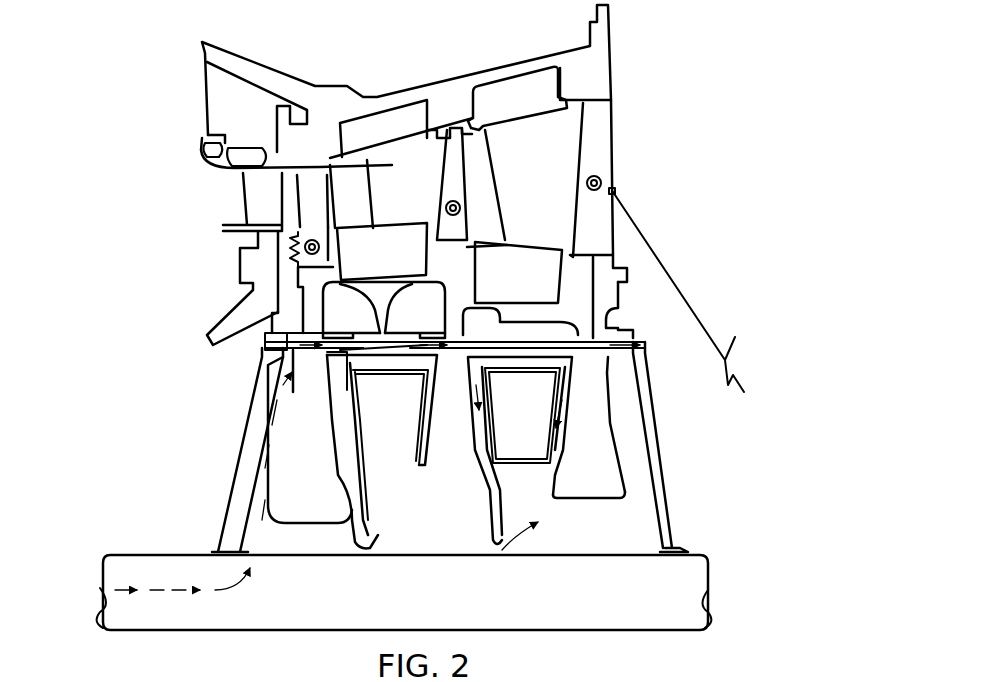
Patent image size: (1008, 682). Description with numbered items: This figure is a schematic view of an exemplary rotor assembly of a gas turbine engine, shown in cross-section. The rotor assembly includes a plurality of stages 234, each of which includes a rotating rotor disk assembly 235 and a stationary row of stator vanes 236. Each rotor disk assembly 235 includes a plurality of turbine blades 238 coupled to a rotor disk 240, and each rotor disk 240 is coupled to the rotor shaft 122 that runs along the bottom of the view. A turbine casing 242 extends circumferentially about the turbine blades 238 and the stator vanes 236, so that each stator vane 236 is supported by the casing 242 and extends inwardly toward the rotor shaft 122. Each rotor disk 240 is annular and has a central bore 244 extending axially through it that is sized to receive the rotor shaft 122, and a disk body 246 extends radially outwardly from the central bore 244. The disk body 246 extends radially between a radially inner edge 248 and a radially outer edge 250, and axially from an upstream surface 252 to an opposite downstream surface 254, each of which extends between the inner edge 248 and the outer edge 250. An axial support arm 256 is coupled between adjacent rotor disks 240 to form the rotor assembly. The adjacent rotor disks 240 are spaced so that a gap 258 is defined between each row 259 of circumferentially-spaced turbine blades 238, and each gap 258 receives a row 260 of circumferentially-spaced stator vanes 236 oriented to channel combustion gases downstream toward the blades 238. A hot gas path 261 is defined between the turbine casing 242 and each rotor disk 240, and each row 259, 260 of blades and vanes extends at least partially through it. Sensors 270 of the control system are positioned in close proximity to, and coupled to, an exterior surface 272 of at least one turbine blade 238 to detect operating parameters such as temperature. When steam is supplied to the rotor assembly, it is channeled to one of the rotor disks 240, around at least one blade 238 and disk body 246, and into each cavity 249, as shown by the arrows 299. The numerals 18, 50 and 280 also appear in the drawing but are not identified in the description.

The rotor disk arm 18 is at (654, 417).
The turbine blade root 50 is at (614, 433).
The rotor shaft 122 is at (633, 603).
The stages 234 is at (403, 125).
The rotor disk assembly 235 is at (635, 313).
The stator vanes 236 is at (407, 184).
The turbine blades 238 is at (337, 211).
The rotor disk 240 is at (483, 455).
The turbine casing 242 is at (483, 68).
The central bore 244 is at (648, 505).
The disk body 246 is at (606, 490).
The radially inner edge 248 is at (573, 505).
The cavity 249 is at (640, 347).
The radially outer edge 250 is at (263, 402).
The upstream surface 252 is at (283, 495).
The downstream surface 254 is at (333, 417).
The axial support arm 256 is at (596, 337).
The gap 258 is at (575, 150).
The row of turbine blades 259 is at (303, 155).
The row of stator vanes 260 is at (387, 137).
The hot gas path 261 is at (480, 158).
The sensors 270 is at (303, 230).
The exterior surface 272 is at (290, 232).
The pin 280 is at (602, 182).
The arrows 299 is at (90, 592).